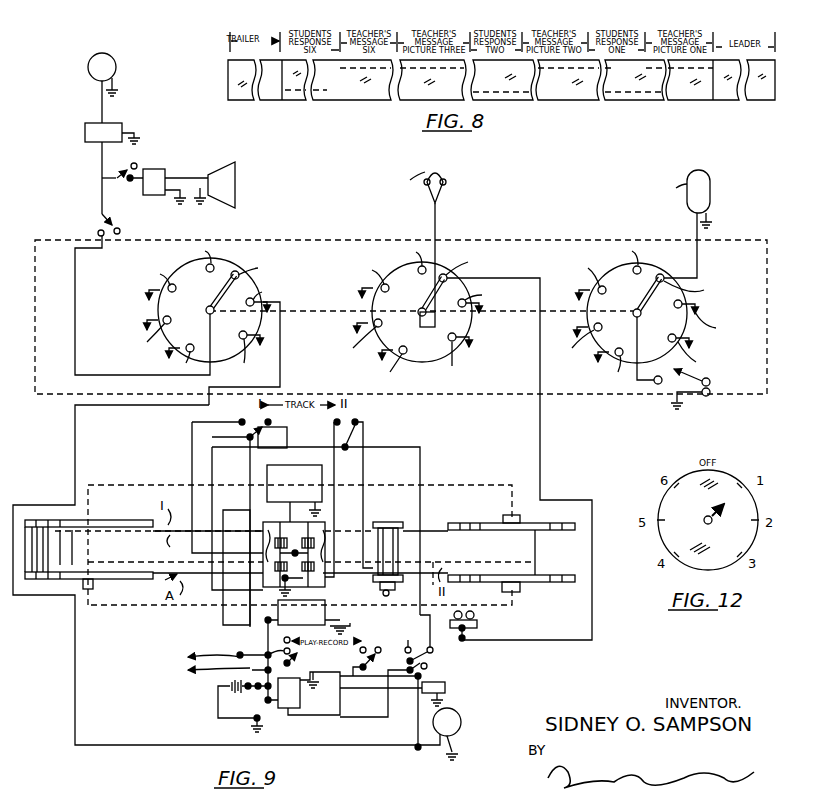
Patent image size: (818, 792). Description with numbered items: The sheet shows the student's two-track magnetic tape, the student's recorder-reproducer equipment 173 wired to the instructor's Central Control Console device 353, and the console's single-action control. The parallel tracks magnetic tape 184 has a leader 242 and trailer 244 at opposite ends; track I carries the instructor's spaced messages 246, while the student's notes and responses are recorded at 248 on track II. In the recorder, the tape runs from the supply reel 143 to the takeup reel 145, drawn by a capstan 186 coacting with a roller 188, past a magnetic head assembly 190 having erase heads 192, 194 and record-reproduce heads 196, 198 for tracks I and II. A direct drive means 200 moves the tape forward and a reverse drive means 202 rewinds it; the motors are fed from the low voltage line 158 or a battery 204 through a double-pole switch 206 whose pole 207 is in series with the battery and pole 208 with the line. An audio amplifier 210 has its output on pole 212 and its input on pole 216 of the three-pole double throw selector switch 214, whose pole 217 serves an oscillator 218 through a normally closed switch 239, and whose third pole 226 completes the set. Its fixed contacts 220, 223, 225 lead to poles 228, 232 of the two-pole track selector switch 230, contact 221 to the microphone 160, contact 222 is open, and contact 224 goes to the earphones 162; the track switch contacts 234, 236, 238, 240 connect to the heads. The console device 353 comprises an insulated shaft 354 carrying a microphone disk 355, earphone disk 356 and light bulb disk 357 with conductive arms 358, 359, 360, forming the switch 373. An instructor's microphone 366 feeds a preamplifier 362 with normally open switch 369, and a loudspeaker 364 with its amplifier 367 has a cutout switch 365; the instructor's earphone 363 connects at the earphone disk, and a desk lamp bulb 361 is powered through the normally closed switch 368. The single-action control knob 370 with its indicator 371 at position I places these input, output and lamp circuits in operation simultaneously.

In FIG. 8, the leader 242 is at (760, 98).
In FIG. 8, the trailer 244 is at (243, 97).
In FIG. 8, the spaced messages 246 is at (700, 41).
In FIG. 8, the student recordings 248 is at (508, 96).
In FIG. 9, the instructor's microphone 366 is at (88, 68).
In FIG. 9, the preamplifier 362 is at (118, 125).
In FIG. 9, the normally closed switch 365 is at (122, 166).
In FIG. 9, the amplifier 367 is at (153, 196).
In FIG. 9, the loudspeaker 364 is at (237, 175).
In FIG. 9, the normally open switch 369 is at (98, 221).
In FIG. 9, the switch 373 is at (522, 240).
In FIG. 9, the insulated shaft 354 is at (338, 304).
In FIG. 9, the Central Control Console device 353 is at (338, 282).
In FIG. 9, the microphone disk 355 is at (219, 269).
In FIG. 9, the conductive arm 358 is at (226, 283).
In FIG. 9, the earphone disk 356 is at (445, 276).
In FIG. 9, the conductive arm 359 is at (426, 292).
In FIG. 9, the instructor's earphone 363 is at (447, 192).
In FIG. 9, the light bulb disk 357 is at (653, 272).
In FIG. 9, the conductive arm 360 is at (655, 300).
In FIG. 9, the desk lamp bulb 361 is at (705, 182).
In FIG. 9, the normally closed switch 368 is at (655, 384).
In FIG. 9, the student's recorder-reproducer equipment 173 is at (185, 612).
In FIG. 9, the supply reel 143 is at (107, 523).
In FIG. 9, the parallel tracks magnetic tape 184 is at (440, 530).
In FIG. 9, the takeup reel 145 is at (573, 521).
In FIG. 9, the capstan 186 is at (405, 528).
In FIG. 9, the roller 188 is at (383, 595).
In FIG. 9, the magnetic head assembly 190 is at (257, 520).
In FIG. 9, the erase head 192 is at (312, 538).
In FIG. 9, the erase head 194 is at (316, 568).
In FIG. 9, the record-reproduce head 196 is at (278, 538).
In FIG. 9, the record-reproduce head 198 is at (272, 566).
In FIG. 9, the direct drive means 200 is at (272, 465).
In FIG. 9, the reverse drive means 202 is at (300, 600).
In FIG. 9, the battery 204 is at (228, 686).
In FIG. 9, the double-pole switch 206 is at (256, 662).
In FIG. 9, the pole 207 is at (258, 688).
In FIG. 9, the pole 208 is at (202, 662).
In FIG. 9, the audio amplifier 210 is at (300, 700).
In FIG. 9, the pole 212 is at (416, 679).
In FIG. 9, the three-pole double throw selector switch 214 is at (365, 618).
In FIG. 9, the pole 216 is at (265, 650).
In FIG. 9, the pole 217 is at (366, 678).
In FIG. 9, the oscillator 218 is at (447, 688).
In FIG. 9, the fixed contact 220 is at (248, 437).
In FIG. 9, the fixed contact 221 is at (300, 648).
In FIG. 9, the fixed contact 222 is at (360, 652).
In FIG. 9, the fixed contact 223 is at (372, 665).
In FIG. 9, the fixed contact 224 is at (407, 648).
In FIG. 9, the fixed contact 225 is at (434, 651).
In FIG. 9, the pole 226 is at (428, 660).
In FIG. 9, the pole 228 is at (268, 437).
In FIG. 9, the two-pole track selector switch 230 is at (290, 466).
In FIG. 9, the pole 232 is at (348, 446).
In FIG. 9, the contact 234 is at (247, 408).
In FIG. 9, the contact 236 is at (270, 420).
In FIG. 9, the contact 238 is at (340, 420).
In FIG. 9, the normally closed switch 239 is at (416, 682).
In FIG. 9, the contact 240 is at (358, 420).
In FIG. 9, the low voltage line 158 is at (260, 654).
In FIG. 9, the microphone 160 is at (462, 722).
In FIG. 9, the earphones 162 is at (478, 623).
In FIG. 12, the single-action control knob 370 is at (747, 508).
In FIG. 12, the indicator 371 is at (715, 521).